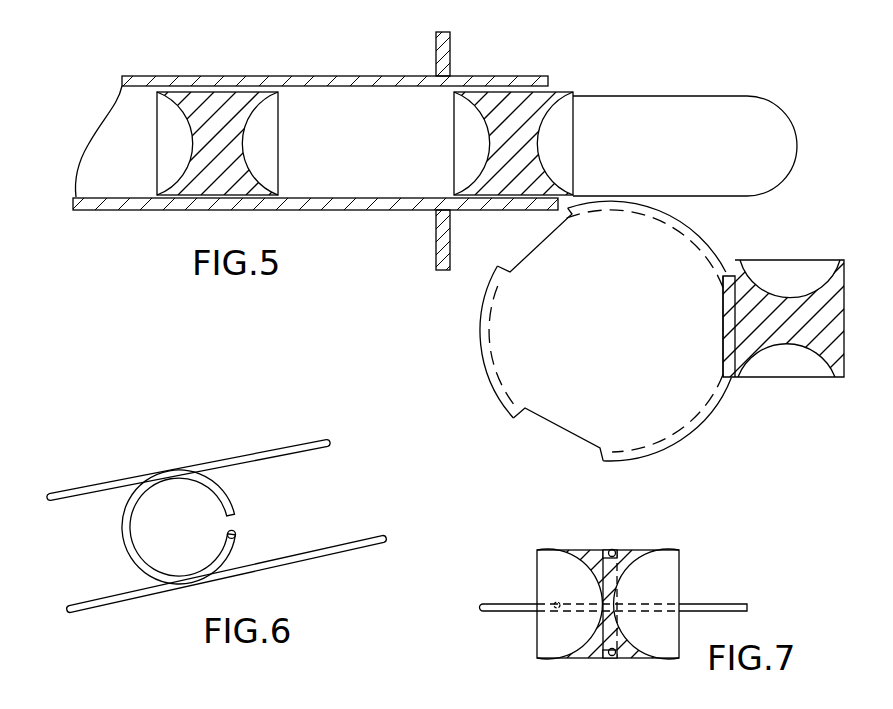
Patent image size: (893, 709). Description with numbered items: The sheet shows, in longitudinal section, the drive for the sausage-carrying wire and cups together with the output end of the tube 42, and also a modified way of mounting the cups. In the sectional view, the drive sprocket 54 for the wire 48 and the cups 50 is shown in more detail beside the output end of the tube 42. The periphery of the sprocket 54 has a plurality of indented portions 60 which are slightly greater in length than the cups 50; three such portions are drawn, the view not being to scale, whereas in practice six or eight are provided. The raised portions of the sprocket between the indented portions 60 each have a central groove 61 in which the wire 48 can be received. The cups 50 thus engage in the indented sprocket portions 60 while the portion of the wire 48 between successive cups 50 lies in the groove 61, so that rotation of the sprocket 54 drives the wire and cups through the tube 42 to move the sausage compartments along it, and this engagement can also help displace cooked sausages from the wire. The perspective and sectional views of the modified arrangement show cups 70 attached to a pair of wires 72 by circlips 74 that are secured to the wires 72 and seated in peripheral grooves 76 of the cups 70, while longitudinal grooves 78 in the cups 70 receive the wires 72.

In FIG. 5, the tube 42 is at (485, 79).
In FIG. 5, the wire 48 is at (350, 197).
In FIG. 5, the cups 50 is at (213, 106).
In FIG. 5, the drive sprocket 54 is at (686, 394).
In FIG. 5, the indented portions 60 is at (528, 262).
In FIG. 5, the central groove 61 is at (681, 230).
In FIG. 7, the cups 70 is at (626, 563).
In FIG. 6, the wires 72 is at (262, 458).
In FIG. 7, the wires 72 is at (505, 612).
In FIG. 6, the circlips 74 is at (238, 536).
In FIG. 7, the circlips 74 is at (614, 657).
In FIG. 7, the peripheral grooves 76 is at (611, 549).
In FIG. 7, the longitudinal grooves 78 is at (555, 601).